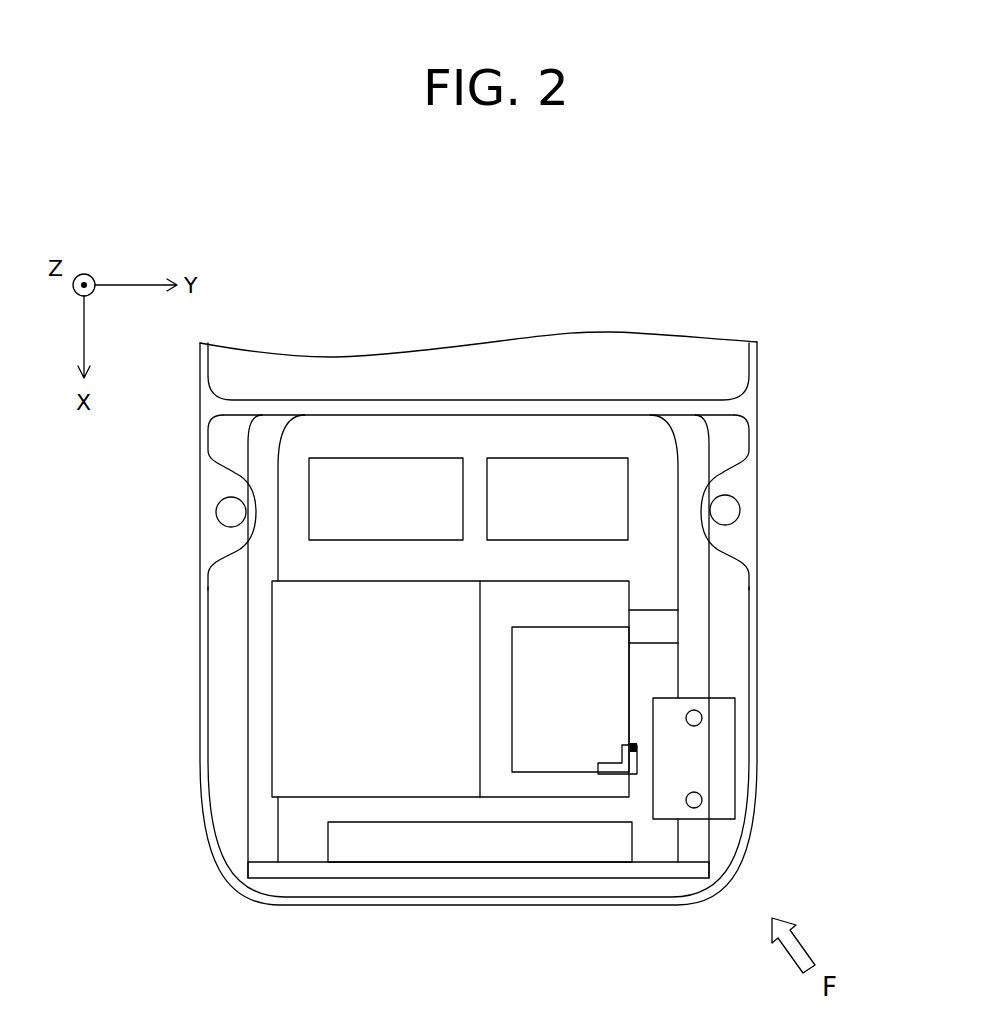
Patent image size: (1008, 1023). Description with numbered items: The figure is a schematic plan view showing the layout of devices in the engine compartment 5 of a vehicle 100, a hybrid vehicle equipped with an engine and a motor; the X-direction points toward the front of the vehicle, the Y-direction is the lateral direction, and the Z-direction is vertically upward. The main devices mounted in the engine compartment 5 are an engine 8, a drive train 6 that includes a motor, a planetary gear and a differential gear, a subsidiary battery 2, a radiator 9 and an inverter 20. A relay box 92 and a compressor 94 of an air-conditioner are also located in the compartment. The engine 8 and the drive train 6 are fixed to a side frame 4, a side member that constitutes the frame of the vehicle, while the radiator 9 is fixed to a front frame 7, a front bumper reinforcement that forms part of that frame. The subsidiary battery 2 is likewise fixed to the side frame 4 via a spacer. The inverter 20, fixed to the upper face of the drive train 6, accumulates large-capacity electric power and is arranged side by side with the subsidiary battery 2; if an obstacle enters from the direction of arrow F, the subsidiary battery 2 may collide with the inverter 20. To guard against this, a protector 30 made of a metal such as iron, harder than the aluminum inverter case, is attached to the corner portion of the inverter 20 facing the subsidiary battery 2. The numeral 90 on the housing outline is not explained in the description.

The vehicle 100 is at (830, 244).
The inner housing wall with mounting bosses 90 is at (750, 480).
The side frame 4 is at (700, 638).
The front frame 7 is at (305, 870).
The radiator 9 is at (400, 850).
The engine compartment 5 is at (652, 436).
The relay box 92 is at (381, 473).
The compressor of an air-conditioner 94 is at (559, 473).
The engine 8 is at (337, 682).
The inverter 20 is at (618, 680).
The drive train 6 is at (618, 595).
The subsidiary battery 2 is at (722, 762).
The protector 30 is at (630, 760).